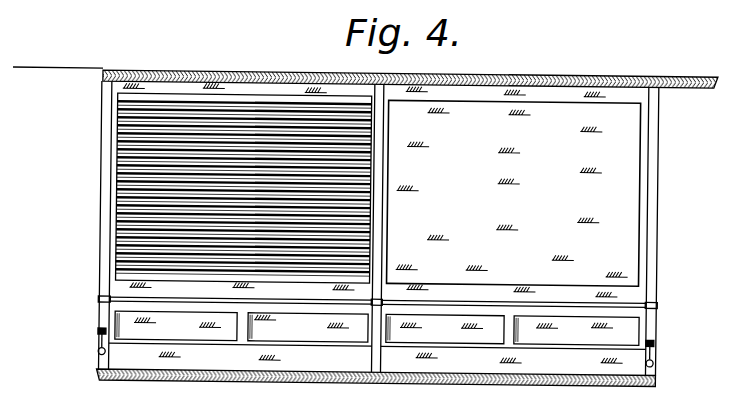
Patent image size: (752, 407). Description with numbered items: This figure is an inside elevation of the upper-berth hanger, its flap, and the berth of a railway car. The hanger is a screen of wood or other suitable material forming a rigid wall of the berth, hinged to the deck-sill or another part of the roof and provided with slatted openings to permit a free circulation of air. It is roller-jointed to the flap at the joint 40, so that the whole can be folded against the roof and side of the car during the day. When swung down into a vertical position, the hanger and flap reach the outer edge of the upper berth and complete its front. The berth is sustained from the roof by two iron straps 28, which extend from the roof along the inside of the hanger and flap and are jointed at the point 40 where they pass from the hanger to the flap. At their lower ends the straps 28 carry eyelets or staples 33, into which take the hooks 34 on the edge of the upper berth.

The iron straps 28 is at (102, 210).
The joint 40 is at (101, 299).
The eyelets or staples 33 is at (101, 331).
The hooks 34 is at (101, 352).